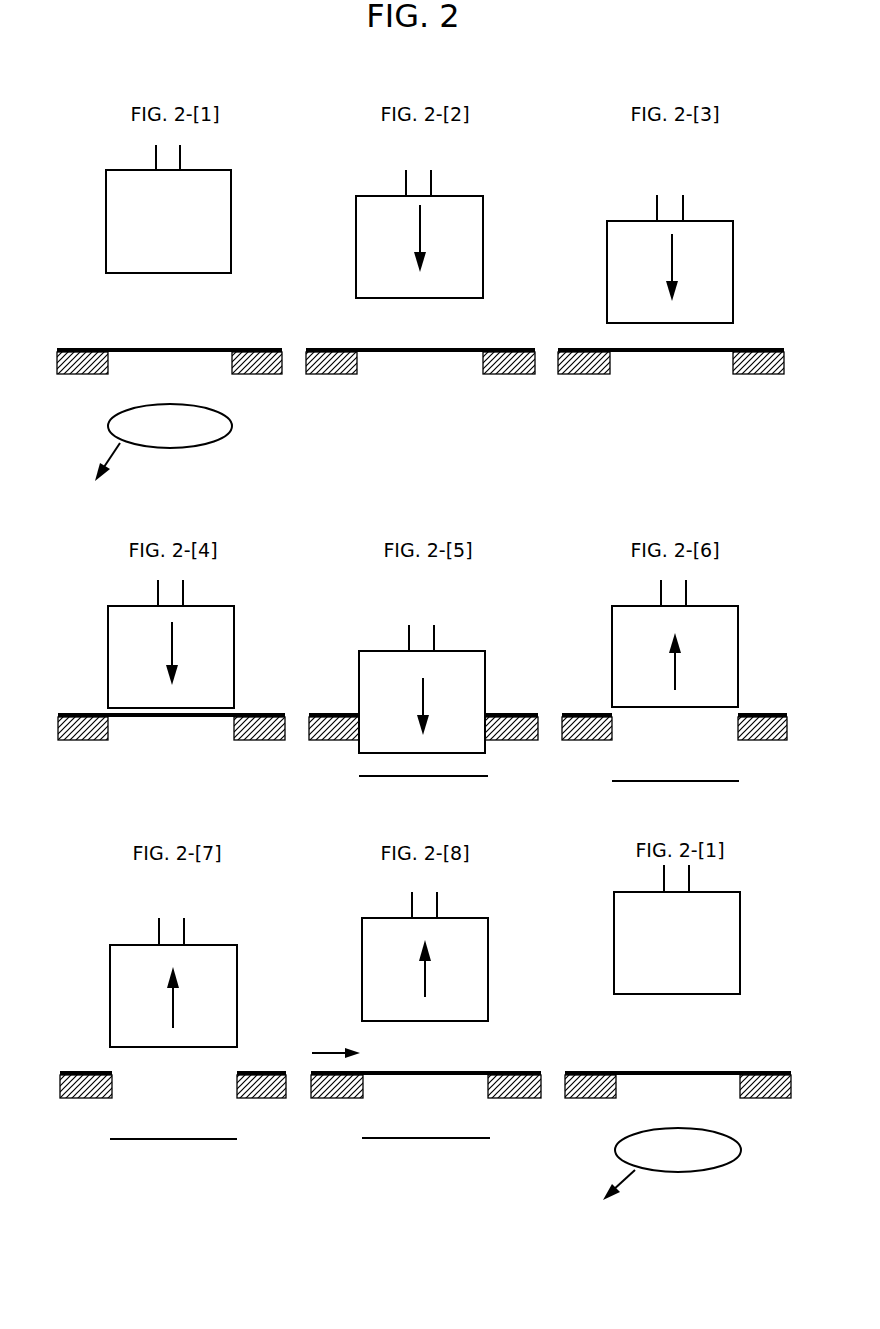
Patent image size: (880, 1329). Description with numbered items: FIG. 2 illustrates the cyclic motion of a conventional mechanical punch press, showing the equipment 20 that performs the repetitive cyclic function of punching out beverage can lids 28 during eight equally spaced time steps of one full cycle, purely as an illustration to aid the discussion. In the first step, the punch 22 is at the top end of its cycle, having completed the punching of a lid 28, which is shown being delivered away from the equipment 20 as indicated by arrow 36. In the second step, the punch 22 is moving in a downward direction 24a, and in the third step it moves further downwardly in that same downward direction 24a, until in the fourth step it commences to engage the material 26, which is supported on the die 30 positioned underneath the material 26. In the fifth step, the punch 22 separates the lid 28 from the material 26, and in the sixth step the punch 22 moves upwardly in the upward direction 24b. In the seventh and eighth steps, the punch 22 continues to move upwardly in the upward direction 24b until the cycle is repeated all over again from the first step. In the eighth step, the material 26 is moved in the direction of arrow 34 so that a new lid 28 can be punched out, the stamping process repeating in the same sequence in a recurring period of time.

The equipment 20 is at (76, 228).
The punch 22 is at (231, 218).
The downward direction 24a is at (420, 230).
The upward direction 24b is at (675, 667).
The material 26 is at (248, 350).
The lid 28 is at (213, 442).
The die 30 is at (90, 375).
The arrow 34 is at (323, 1052).
The arrow 36 is at (118, 446).